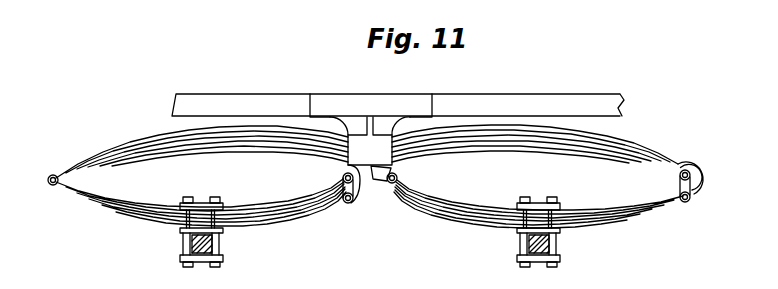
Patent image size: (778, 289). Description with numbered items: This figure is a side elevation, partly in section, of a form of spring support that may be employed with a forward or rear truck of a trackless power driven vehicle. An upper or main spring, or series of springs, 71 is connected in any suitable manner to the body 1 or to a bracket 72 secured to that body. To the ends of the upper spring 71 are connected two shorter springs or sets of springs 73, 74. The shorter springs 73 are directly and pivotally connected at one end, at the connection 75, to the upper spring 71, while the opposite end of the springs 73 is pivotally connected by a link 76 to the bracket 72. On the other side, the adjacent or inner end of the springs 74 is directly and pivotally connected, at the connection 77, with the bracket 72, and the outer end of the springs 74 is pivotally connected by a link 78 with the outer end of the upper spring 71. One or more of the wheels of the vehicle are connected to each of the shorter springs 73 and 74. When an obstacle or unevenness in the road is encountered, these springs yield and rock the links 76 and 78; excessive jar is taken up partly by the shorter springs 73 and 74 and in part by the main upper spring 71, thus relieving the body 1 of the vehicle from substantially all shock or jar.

The body 1 is at (489, 75).
The upper spring 71 is at (287, 135).
The bracket 72 is at (395, 136).
The shorter springs 73 is at (285, 213).
The shorter springs 74 is at (487, 219).
The pivotal connection 75 is at (53, 186).
The link 76 is at (338, 186).
The pivotal connection 77 is at (391, 184).
The link 78 is at (680, 188).